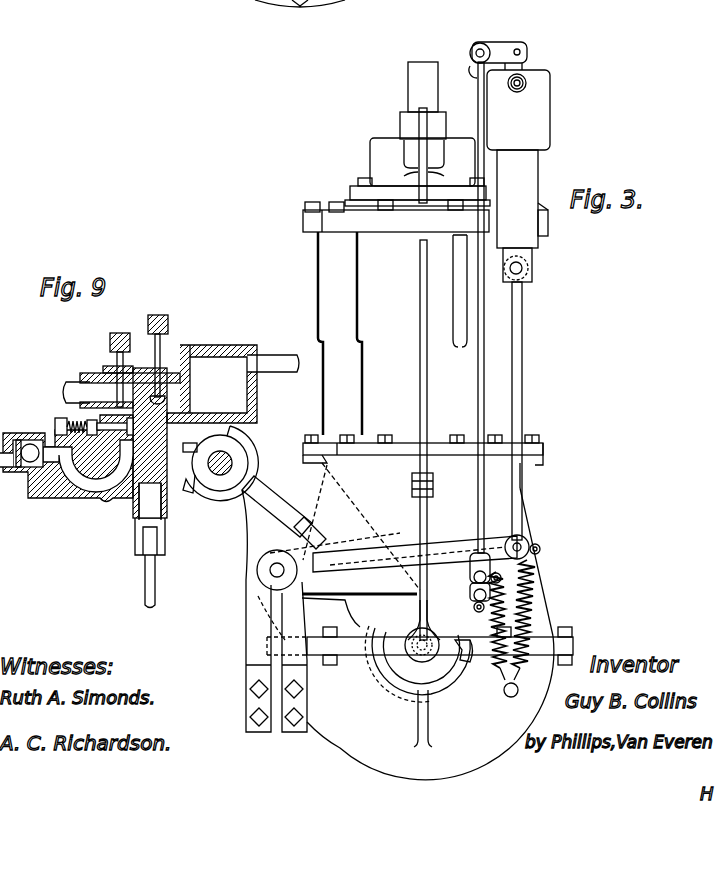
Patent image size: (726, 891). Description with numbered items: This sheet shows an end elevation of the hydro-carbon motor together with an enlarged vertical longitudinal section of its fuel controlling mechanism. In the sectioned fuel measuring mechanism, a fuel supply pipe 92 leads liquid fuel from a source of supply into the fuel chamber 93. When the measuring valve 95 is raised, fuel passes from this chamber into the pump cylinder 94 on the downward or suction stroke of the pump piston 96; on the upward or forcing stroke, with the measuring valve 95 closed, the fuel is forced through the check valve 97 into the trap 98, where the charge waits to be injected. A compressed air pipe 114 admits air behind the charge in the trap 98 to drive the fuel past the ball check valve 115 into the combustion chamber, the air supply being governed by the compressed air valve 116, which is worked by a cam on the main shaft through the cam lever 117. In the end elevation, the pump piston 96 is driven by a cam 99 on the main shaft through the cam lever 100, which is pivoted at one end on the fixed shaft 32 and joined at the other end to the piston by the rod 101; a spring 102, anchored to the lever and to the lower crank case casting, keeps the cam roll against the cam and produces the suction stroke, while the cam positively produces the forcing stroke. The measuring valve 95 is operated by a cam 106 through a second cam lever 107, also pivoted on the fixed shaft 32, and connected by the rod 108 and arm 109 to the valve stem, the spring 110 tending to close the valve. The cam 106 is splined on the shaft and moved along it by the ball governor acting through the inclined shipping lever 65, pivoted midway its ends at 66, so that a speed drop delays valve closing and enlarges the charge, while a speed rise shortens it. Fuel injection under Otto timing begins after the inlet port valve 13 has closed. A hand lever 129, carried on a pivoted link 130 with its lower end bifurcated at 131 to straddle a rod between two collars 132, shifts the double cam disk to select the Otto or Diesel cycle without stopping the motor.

In FIG. 3, the inlet port valve 13 is at (412, 74).
In FIG. 3, the fixed shaft 32 is at (270, 566).
In FIG. 3, the inclined shipping lever 65 is at (328, 512).
In FIG. 3, the pivot 66 is at (316, 534).
In FIG. 9, the fuel supply pipe 92 is at (280, 357).
In FIG. 9, the fuel chamber 93 is at (212, 384).
In FIG. 3, the pump cylinder 94 is at (170, 425).
In FIG. 9, the pump cylinder 94 is at (168, 423).
In FIG. 9, the measuring valve 95 is at (166, 404).
In FIG. 9, the pump piston 96 is at (150, 501).
In FIG. 9, the check valve 97 is at (147, 373).
In FIG. 9, the trap 98 is at (98, 490).
In FIG. 3, the cam 99 is at (393, 550).
In FIG. 3, the cam lever 100 is at (388, 553).
In FIG. 3, the rod 101 is at (518, 402).
In FIG. 9, the rod 101 is at (146, 566).
In FIG. 3, the spring 102 is at (535, 592).
In FIG. 3, the cam 106 is at (444, 663).
In FIG. 3, the cam lever 107 is at (446, 566).
In FIG. 3, the rod 108 is at (478, 385).
In FIG. 3, the arm 109 is at (502, 46).
In FIG. 3, the spring 110 is at (490, 588).
In FIG. 9, the compressed air pipe 114 is at (75, 392).
In FIG. 9, the check valve 115 is at (24, 442).
In FIG. 9, the compressed air valve 116 is at (118, 407).
In FIG. 3, the cam lever 117 is at (505, 625).
In FIG. 3, the hand lever 129 is at (420, 358).
In FIG. 3, the pivoted link 130 is at (433, 483).
In FIG. 3, the bifurcated end 131 is at (416, 660).
In FIG. 3, the collars 132 is at (425, 660).